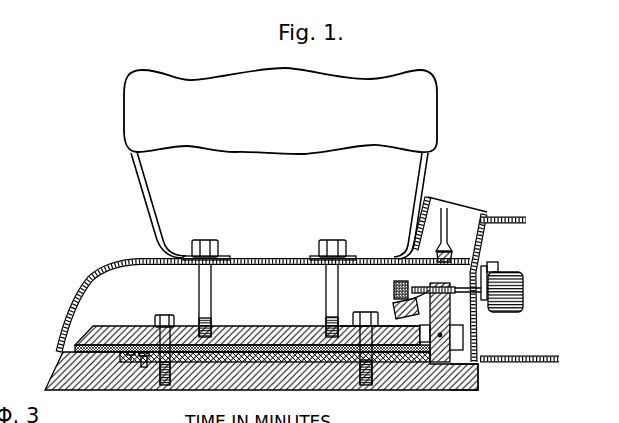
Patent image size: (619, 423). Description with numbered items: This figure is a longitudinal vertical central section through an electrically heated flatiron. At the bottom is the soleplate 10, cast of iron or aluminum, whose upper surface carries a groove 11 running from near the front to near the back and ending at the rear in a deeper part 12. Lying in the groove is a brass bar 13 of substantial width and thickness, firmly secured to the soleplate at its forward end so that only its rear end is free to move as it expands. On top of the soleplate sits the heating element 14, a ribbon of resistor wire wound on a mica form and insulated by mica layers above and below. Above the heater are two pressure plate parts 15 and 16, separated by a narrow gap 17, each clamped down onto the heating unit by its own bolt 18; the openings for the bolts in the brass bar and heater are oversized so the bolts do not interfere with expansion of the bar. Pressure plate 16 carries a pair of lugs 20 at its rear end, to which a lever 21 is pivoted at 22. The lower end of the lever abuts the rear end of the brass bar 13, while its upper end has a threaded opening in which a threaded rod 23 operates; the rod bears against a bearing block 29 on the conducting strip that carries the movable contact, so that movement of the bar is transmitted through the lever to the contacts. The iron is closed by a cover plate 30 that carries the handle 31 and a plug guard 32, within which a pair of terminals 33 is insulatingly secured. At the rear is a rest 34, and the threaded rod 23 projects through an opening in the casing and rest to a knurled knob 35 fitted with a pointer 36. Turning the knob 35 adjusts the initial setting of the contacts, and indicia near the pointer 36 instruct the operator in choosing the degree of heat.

The soleplate 10 is at (67, 384).
The groove 11 is at (127, 362).
The deeper part 12 is at (451, 372).
The brass bar 13 is at (223, 362).
The heating element 14 is at (77, 347).
The pressure plate 15 is at (127, 326).
The pressure plate 16 is at (388, 328).
The gap 17 is at (347, 330).
The bolt 18 is at (167, 315).
The lugs 20 is at (458, 333).
The lever 21 is at (434, 365).
The pivot 22 is at (441, 335).
The threaded rod 23 is at (460, 292).
The bearing block 29 is at (405, 286).
The cover plate 30 is at (124, 262).
The handle 31 is at (431, 104).
The plug guard 32 is at (487, 213).
The terminals 33 is at (448, 212).
The rest 34 is at (537, 356).
The knurled knob 35 is at (524, 284).
The pointer 36 is at (498, 266).